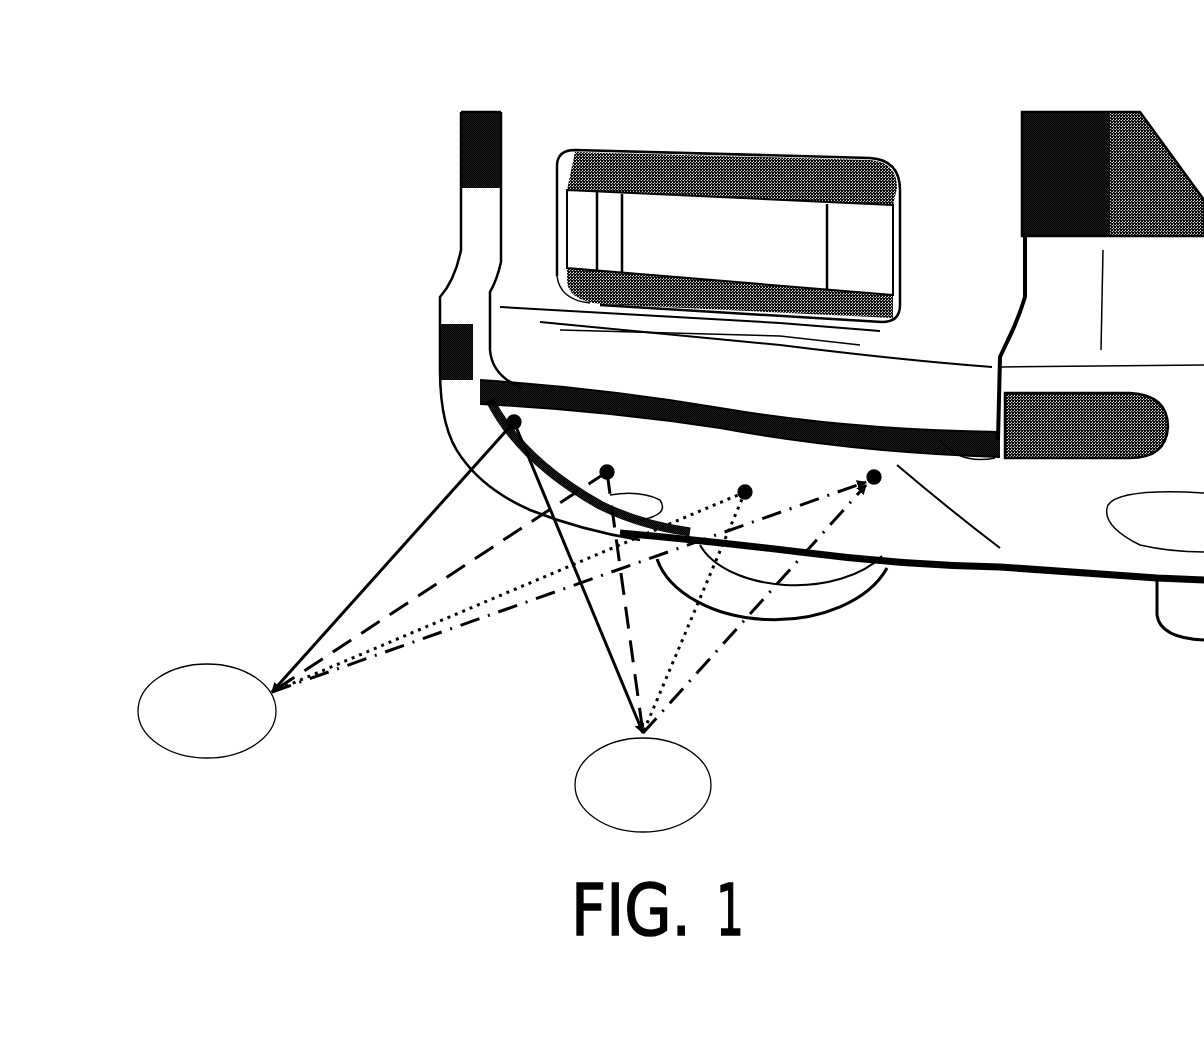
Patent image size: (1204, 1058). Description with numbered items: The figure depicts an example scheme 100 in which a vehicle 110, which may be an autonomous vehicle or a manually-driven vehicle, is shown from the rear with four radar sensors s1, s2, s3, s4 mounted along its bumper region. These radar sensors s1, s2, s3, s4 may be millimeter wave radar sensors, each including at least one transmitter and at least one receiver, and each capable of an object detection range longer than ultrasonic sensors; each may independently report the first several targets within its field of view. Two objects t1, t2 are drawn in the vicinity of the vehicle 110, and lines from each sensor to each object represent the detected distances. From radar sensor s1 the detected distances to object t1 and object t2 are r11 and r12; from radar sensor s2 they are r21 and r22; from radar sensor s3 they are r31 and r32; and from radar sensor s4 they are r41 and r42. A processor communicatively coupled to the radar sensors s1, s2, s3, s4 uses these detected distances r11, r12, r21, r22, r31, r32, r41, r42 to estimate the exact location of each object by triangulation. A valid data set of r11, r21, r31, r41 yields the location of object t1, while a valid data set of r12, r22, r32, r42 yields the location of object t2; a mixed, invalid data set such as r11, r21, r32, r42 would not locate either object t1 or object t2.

The scheme 100 is at (358, 56).
The vehicle 110 is at (780, 128).
The radar sensor s1 is at (533, 429).
The radar sensor s2 is at (623, 475).
The radar sensor s3 is at (760, 494).
The radar sensor s4 is at (879, 493).
The object t1 is at (207, 711).
The object t2 is at (643, 785).
The detected distance r11 is at (393, 557).
The detected distance r21 is at (439, 582).
The detected distance r31 is at (508, 592).
The detected distance r41 is at (569, 587).
The detected distance r12 is at (578, 577).
The detected distance r22 is at (634, 602).
The detected distance r32 is at (694, 612).
The detected distance r42 is at (754, 609).